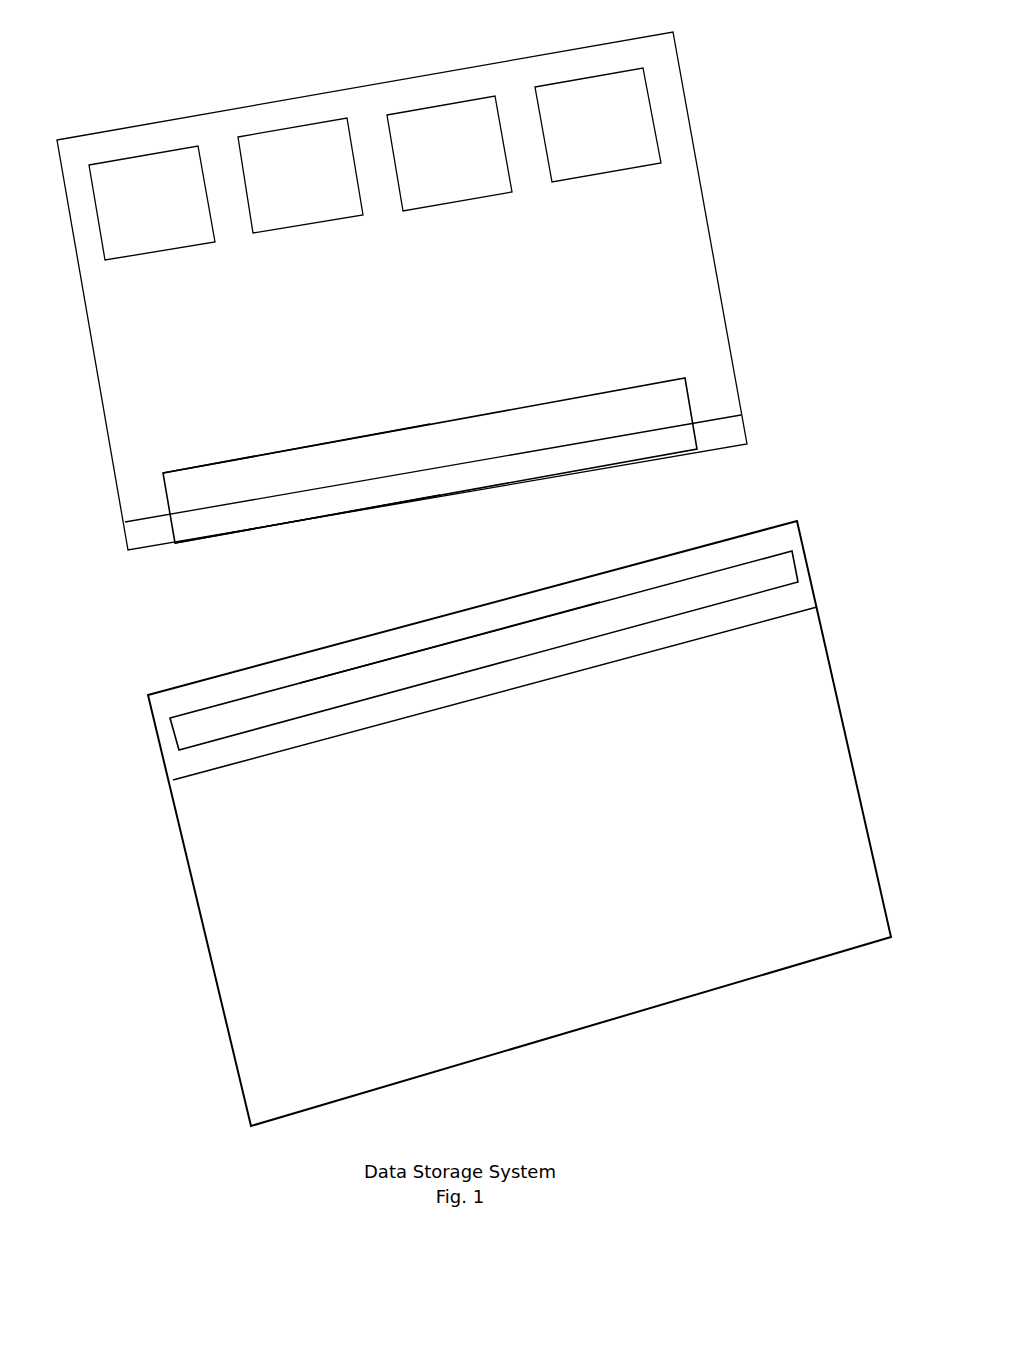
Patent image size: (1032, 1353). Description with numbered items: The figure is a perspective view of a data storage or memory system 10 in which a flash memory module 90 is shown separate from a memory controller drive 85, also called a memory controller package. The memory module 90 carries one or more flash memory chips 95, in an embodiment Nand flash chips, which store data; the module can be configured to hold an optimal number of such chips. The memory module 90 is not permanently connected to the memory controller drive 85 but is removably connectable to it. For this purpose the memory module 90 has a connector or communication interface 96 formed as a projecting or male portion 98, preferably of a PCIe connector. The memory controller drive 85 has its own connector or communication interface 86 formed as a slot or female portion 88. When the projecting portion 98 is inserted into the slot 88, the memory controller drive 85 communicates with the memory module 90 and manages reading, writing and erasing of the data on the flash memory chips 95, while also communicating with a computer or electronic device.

The data storage system 10 is at (760, 235).
The memory controller drive 85 is at (860, 787).
The communication interface 86 is at (449, 658).
The slot 88 is at (713, 595).
The memory module 90 is at (310, 93).
The flash memory chips 95 is at (137, 218).
The connector 96 is at (668, 406).
The projecting portion 98 is at (268, 468).